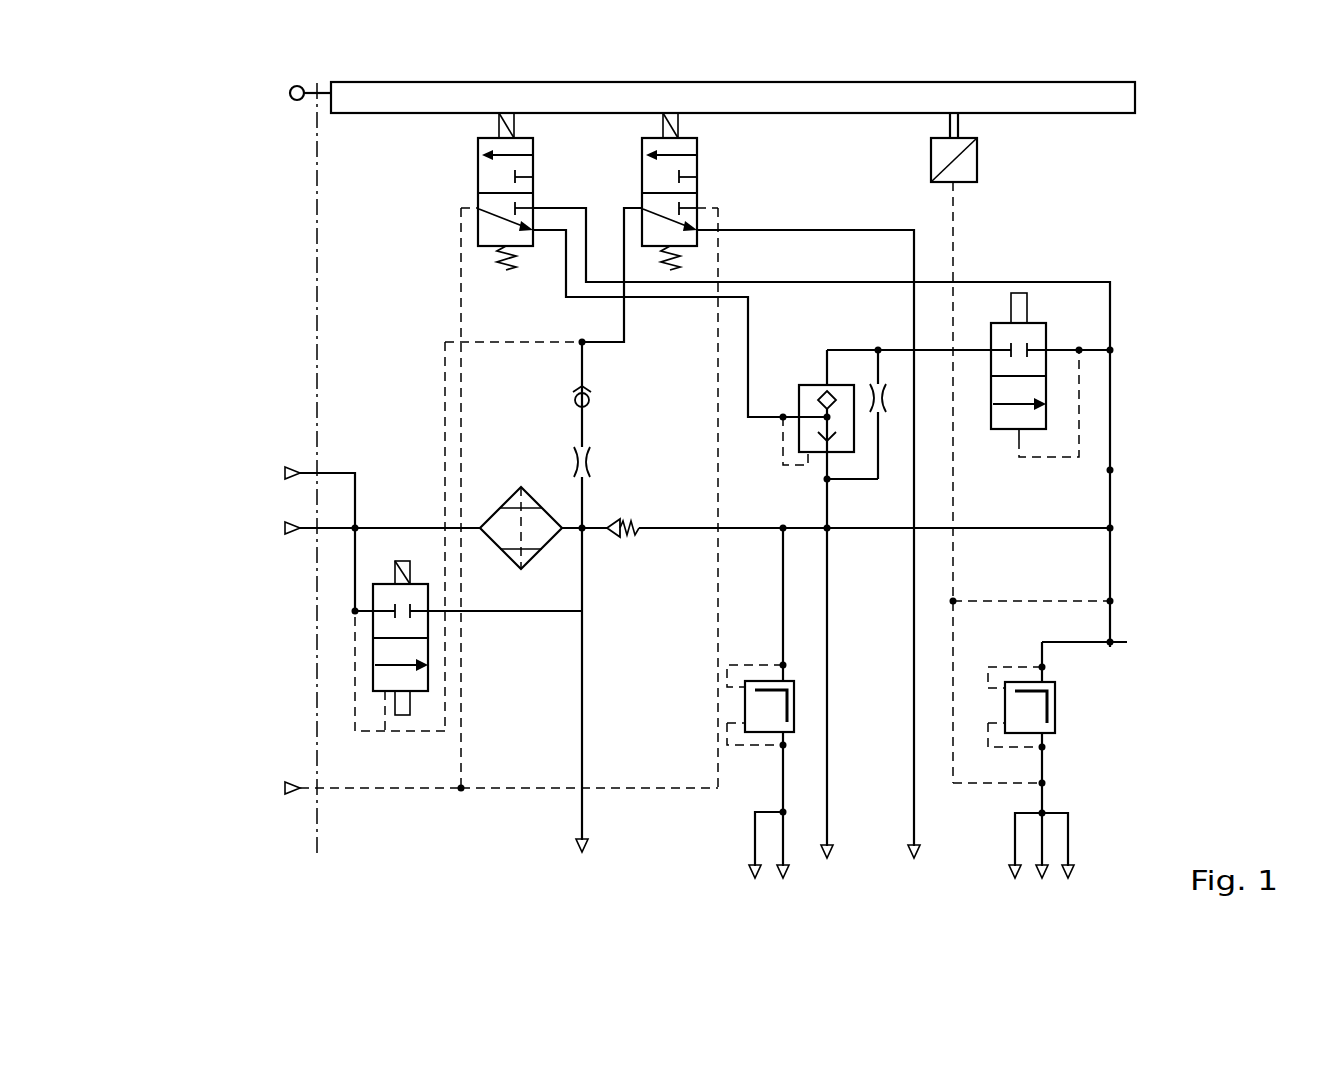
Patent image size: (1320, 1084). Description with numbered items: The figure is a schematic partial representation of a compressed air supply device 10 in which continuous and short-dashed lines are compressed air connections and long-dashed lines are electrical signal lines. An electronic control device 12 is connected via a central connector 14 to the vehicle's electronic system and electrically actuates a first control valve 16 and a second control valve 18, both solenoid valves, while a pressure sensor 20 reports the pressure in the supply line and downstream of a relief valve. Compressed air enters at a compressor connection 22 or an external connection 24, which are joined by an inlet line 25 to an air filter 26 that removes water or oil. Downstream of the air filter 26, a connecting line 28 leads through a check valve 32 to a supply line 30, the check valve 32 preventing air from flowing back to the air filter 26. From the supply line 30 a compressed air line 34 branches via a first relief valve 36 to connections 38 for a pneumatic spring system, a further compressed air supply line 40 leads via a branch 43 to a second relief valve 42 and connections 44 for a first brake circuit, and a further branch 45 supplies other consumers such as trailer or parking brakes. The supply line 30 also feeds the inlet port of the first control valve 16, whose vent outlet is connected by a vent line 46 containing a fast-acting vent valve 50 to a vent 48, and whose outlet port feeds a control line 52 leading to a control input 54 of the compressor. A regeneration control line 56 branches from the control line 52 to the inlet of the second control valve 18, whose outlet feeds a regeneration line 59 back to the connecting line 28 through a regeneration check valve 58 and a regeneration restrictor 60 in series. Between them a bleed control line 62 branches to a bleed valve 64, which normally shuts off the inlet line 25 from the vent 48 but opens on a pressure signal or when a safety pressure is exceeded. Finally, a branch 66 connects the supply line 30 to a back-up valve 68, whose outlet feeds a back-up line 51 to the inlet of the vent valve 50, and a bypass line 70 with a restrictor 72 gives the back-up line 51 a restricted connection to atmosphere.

The compressed air supply device 10 is at (233, 190).
The electronic control device 12 is at (380, 110).
The central connector 14 is at (290, 100).
The first control valve 16 is at (478, 166).
The second control valve 18 is at (697, 164).
The pressure sensor 20 is at (977, 152).
The compressor connection 22 is at (285, 474).
The external connection 24 is at (285, 529).
The inlet line 25 is at (381, 527).
The air filter 26 is at (507, 502).
The connecting line 28 is at (582, 532).
The supply line 30 is at (743, 527).
The check valve 32 is at (625, 520).
The compressed air line 34 is at (780, 560).
The first relief valve 36 is at (786, 678).
The connections 38 is at (783, 880).
The further compressed air supply line 40 is at (1112, 558).
The second relief valve 42 is at (1058, 720).
The branch 43 is at (1110, 650).
The connections 44 is at (1068, 882).
The further branch 45 is at (1108, 472).
The vent line 46 is at (665, 297).
The vent 48 is at (827, 860).
The vent valve 50 is at (815, 385).
The back-up line 51 is at (860, 345).
The control line 52 is at (461, 256).
The control input 54 is at (285, 789).
The regeneration control line 56 is at (672, 790).
The regeneration check valve 58 is at (574, 399).
The regeneration line 59 is at (605, 345).
The regeneration restrictor 60 is at (590, 458).
The bleed control line 62 is at (500, 342).
The bleed valve 64 is at (390, 722).
The branch 66 is at (1110, 350).
The back-up valve 68 is at (1005, 430).
The bypass line 70 is at (840, 482).
The restrictor 72 is at (883, 402).